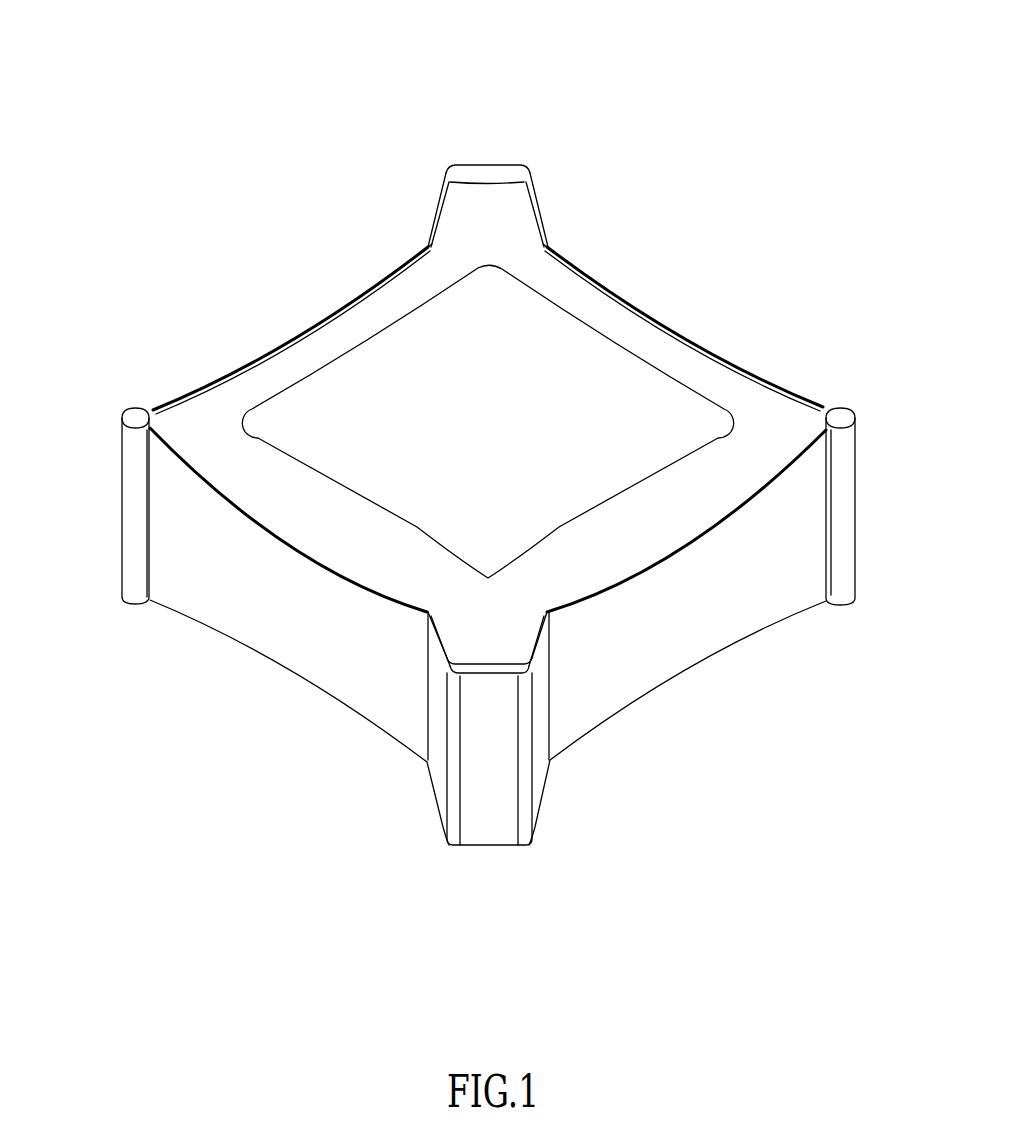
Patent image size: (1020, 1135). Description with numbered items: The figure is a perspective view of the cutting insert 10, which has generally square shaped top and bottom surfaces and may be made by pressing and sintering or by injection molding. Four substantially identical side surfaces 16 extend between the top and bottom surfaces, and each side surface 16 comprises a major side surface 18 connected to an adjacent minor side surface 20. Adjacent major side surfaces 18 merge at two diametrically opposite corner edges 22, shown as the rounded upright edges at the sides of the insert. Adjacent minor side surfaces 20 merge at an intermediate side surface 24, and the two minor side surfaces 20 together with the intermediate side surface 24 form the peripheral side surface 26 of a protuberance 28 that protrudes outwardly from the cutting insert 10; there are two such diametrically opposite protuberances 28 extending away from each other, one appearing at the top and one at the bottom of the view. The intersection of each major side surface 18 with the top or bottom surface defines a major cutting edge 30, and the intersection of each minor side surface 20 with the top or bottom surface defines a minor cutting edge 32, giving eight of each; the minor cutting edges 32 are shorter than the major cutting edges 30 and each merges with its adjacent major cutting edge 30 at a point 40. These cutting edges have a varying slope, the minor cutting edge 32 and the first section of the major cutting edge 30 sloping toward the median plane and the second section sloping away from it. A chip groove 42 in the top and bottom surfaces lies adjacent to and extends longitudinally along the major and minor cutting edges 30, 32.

The cutting insert 10 is at (737, 128).
The side surface 16 is at (277, 610).
The major side surface 18 is at (717, 628).
The minor side surface 20 is at (437, 740).
The corner edge 22 is at (121, 471).
The intermediate side surface 24 is at (507, 810).
The peripheral side surface 26 is at (475, 792).
The protuberance 28 is at (505, 197).
The major cutting edge 30 is at (318, 328).
The minor cutting edge 32 is at (440, 200).
The point 40 is at (426, 245).
The chip groove 42 is at (192, 420).